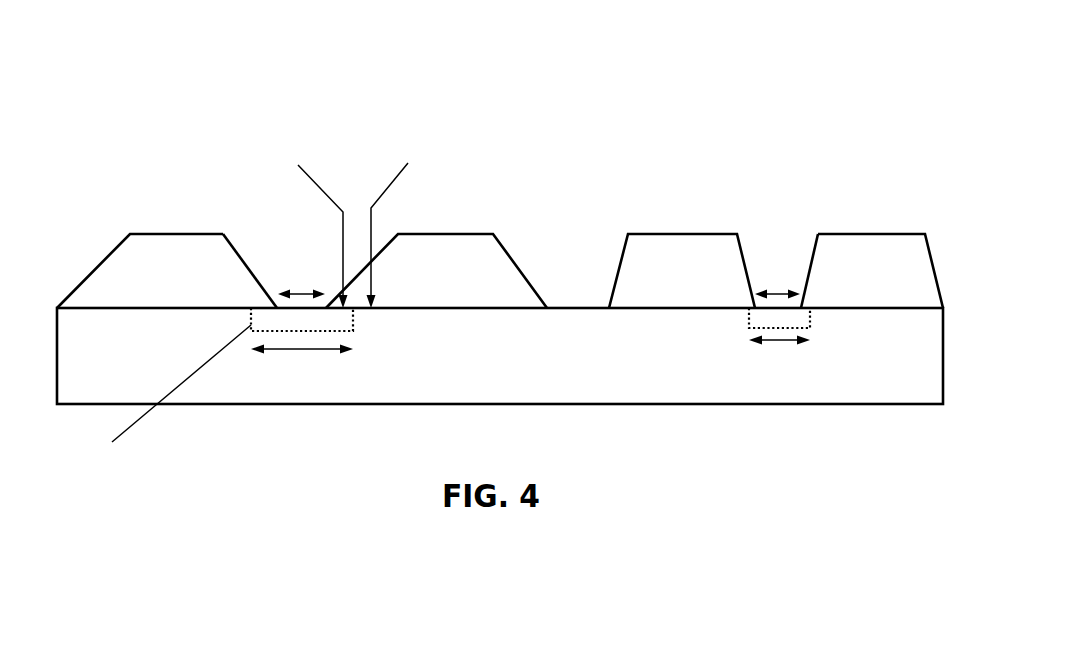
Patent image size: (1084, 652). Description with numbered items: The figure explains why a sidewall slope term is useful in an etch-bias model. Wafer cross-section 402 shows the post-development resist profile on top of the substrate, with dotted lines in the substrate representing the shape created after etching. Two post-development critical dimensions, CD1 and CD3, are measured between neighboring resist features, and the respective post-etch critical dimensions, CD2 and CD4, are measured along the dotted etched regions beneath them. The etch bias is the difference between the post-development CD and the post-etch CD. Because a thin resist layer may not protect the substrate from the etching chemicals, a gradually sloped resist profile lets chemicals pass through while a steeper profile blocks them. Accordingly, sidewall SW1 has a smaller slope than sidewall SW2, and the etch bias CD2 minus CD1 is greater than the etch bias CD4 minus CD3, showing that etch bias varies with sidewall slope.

The wafer cross-section 402 is at (501, 259).
The sidewall SW1 is at (232, 244).
The sidewall SW2 is at (814, 249).
The post-development CD value CD1 is at (301, 279).
The post-etch CD value CD2 is at (302, 343).
The post-development CD value CD3 is at (777, 280).
The post-etch CD value CD4 is at (779, 343).